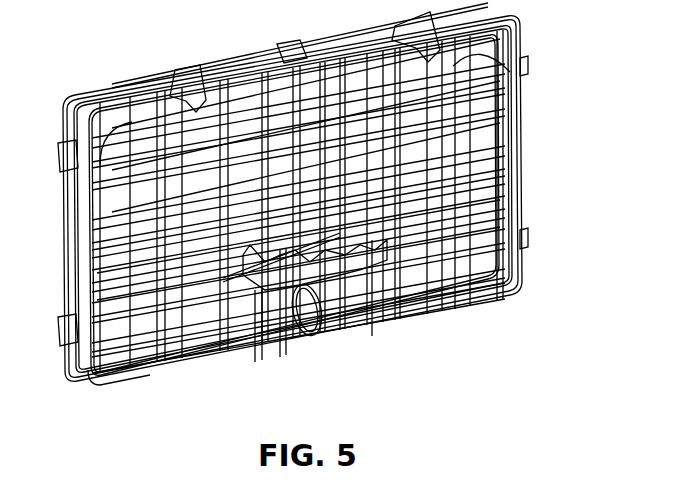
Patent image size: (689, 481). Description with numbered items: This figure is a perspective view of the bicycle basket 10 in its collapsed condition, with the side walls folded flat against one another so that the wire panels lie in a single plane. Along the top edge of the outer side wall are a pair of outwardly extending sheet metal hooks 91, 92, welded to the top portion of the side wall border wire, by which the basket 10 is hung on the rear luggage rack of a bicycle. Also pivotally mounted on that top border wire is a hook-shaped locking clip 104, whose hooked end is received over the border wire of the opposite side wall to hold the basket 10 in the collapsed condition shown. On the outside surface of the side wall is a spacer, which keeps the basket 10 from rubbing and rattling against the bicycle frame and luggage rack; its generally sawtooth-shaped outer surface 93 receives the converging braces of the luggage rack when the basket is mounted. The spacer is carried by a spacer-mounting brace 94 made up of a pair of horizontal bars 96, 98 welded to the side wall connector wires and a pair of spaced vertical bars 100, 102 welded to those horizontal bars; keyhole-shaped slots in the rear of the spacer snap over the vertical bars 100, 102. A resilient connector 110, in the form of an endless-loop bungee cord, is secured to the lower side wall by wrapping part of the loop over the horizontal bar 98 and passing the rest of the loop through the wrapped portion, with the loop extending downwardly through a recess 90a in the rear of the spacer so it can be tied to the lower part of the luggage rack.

The bicycle basket 10 is at (102, 31).
The recess 90a is at (527, 182).
The sheet metal hook 91 is at (187, 72).
The sheet metal hook 92 is at (422, 16).
The hook-shaped locking clip 104 is at (281, 43).
The horizontal bar 98 is at (97, 273).
The horizontal bar 96 is at (97, 300).
The spacer-mounting brace 94 is at (237, 362).
The vertical bar 100 is at (255, 360).
The sawtooth-shaped outer surface 93 is at (282, 357).
The resilient connector 110 is at (308, 347).
The vertical bar 102 is at (362, 275).